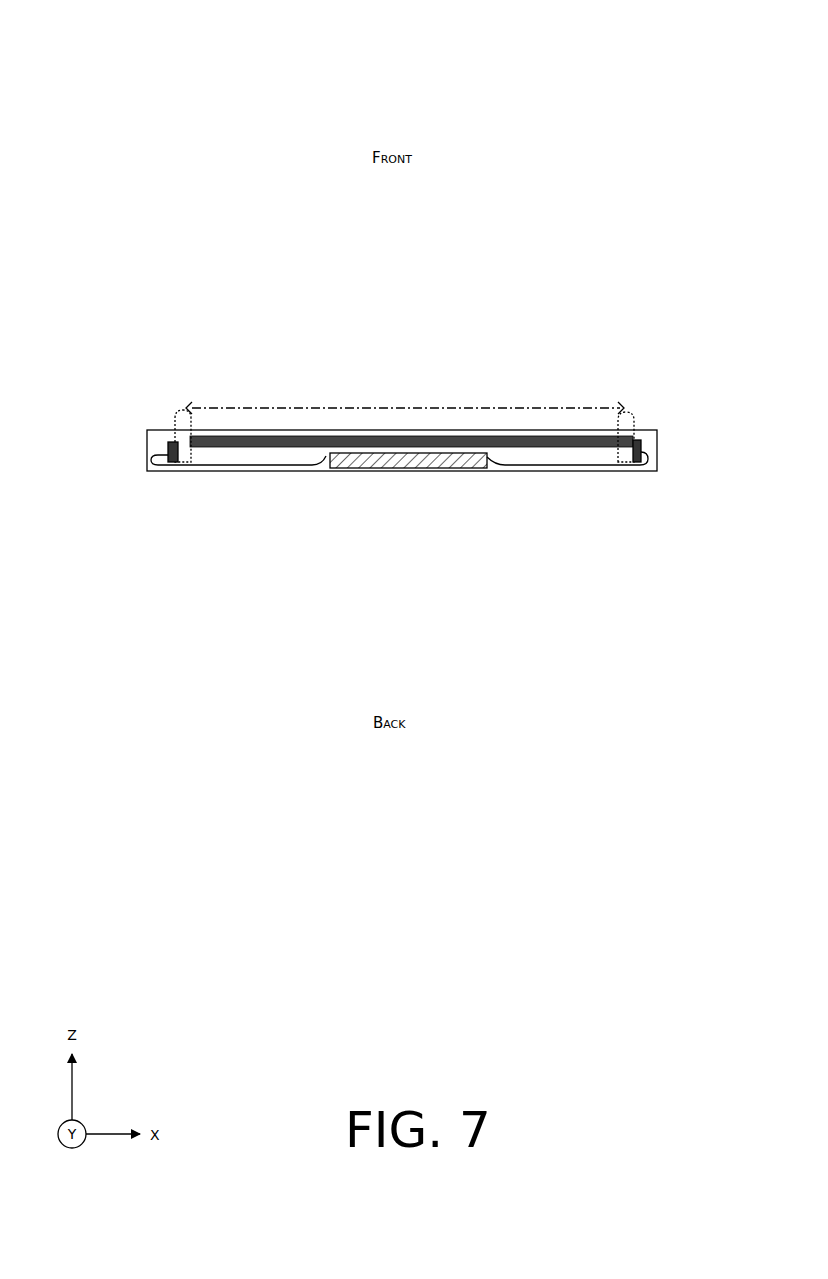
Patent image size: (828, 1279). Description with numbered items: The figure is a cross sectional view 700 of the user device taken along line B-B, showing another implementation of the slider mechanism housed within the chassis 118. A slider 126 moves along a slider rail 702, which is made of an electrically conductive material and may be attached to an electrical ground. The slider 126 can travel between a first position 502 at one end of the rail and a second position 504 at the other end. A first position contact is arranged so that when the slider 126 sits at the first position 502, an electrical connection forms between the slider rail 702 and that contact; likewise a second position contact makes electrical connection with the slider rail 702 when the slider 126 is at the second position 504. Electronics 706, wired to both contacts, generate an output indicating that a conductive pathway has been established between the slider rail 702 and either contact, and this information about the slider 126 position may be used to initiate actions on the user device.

The cross sectional view 700 is at (641, 50).
The slider rail 702 is at (400, 440).
The first position 502 is at (183, 408).
The second position 504 is at (625, 410).
The slider 126 is at (190, 455).
The chassis 118 is at (628, 471).
The electronics 706 is at (453, 460).